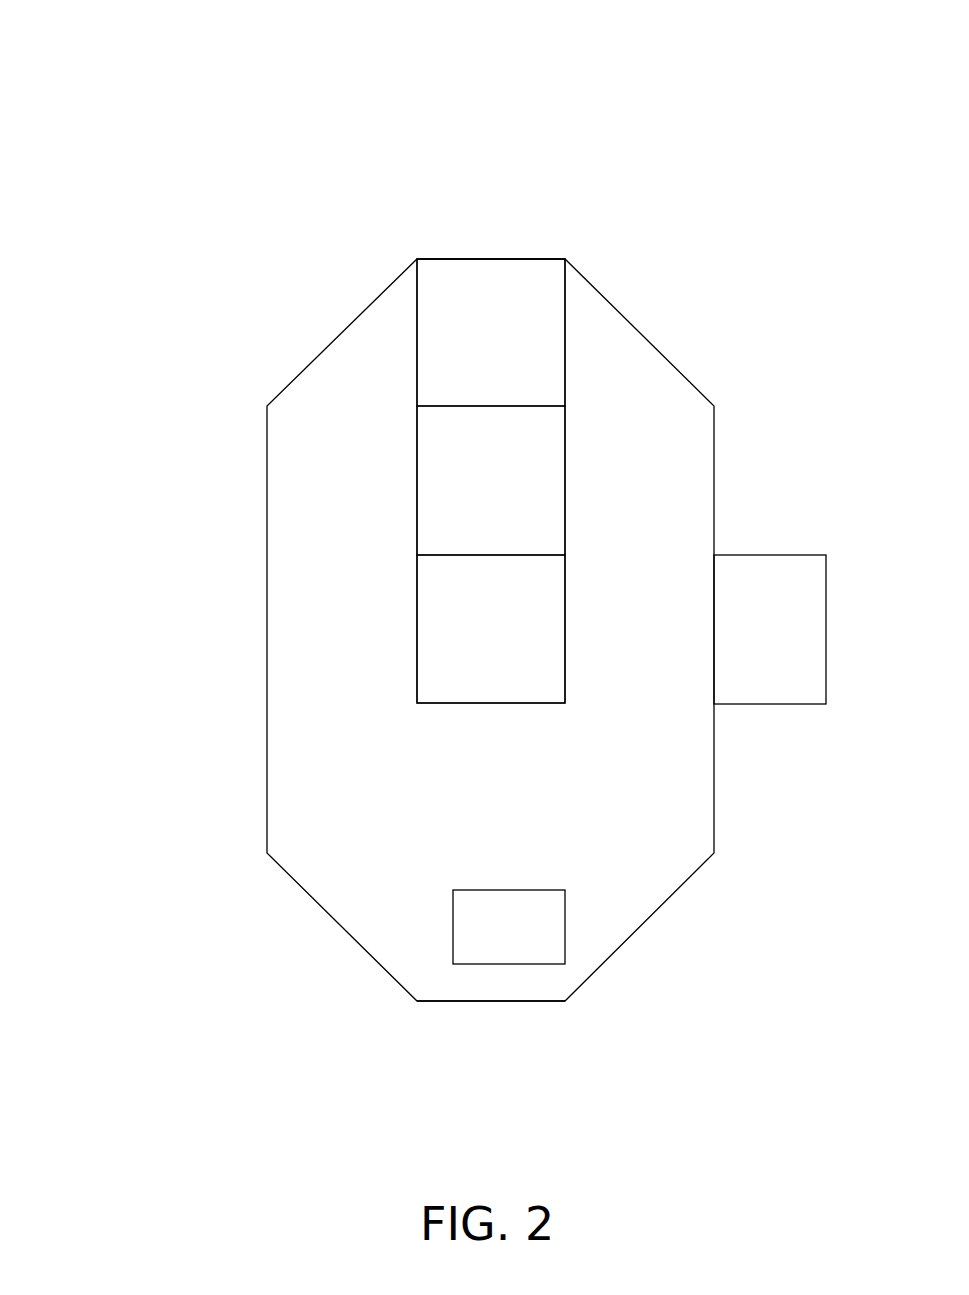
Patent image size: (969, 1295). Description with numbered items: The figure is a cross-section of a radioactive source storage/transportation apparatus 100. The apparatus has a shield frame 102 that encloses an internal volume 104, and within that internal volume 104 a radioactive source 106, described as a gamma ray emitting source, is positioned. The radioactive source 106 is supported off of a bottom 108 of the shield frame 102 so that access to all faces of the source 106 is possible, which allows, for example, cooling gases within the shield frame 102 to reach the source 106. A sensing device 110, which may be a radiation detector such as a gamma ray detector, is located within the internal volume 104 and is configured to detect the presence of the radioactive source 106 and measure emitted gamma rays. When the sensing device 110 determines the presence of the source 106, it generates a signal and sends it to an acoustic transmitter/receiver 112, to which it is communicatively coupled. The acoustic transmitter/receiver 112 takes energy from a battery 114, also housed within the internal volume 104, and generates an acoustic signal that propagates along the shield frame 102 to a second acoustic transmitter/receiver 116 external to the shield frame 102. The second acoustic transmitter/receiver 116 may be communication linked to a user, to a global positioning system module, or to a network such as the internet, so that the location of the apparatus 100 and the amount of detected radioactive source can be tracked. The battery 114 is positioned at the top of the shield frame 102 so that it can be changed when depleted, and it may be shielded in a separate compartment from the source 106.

The radioactive source storage/transportation apparatus 100 is at (703, 152).
The shield frame 102 is at (267, 853).
The internal volume 104 is at (543, 481).
The radioactive source 106 is at (490, 940).
The bottom 108 is at (513, 992).
The sensing device 110 is at (460, 633).
The acoustic transmitter/receiver 112 is at (466, 486).
The battery 114 is at (465, 357).
The second acoustic transmitter/receiver 116 is at (787, 617).